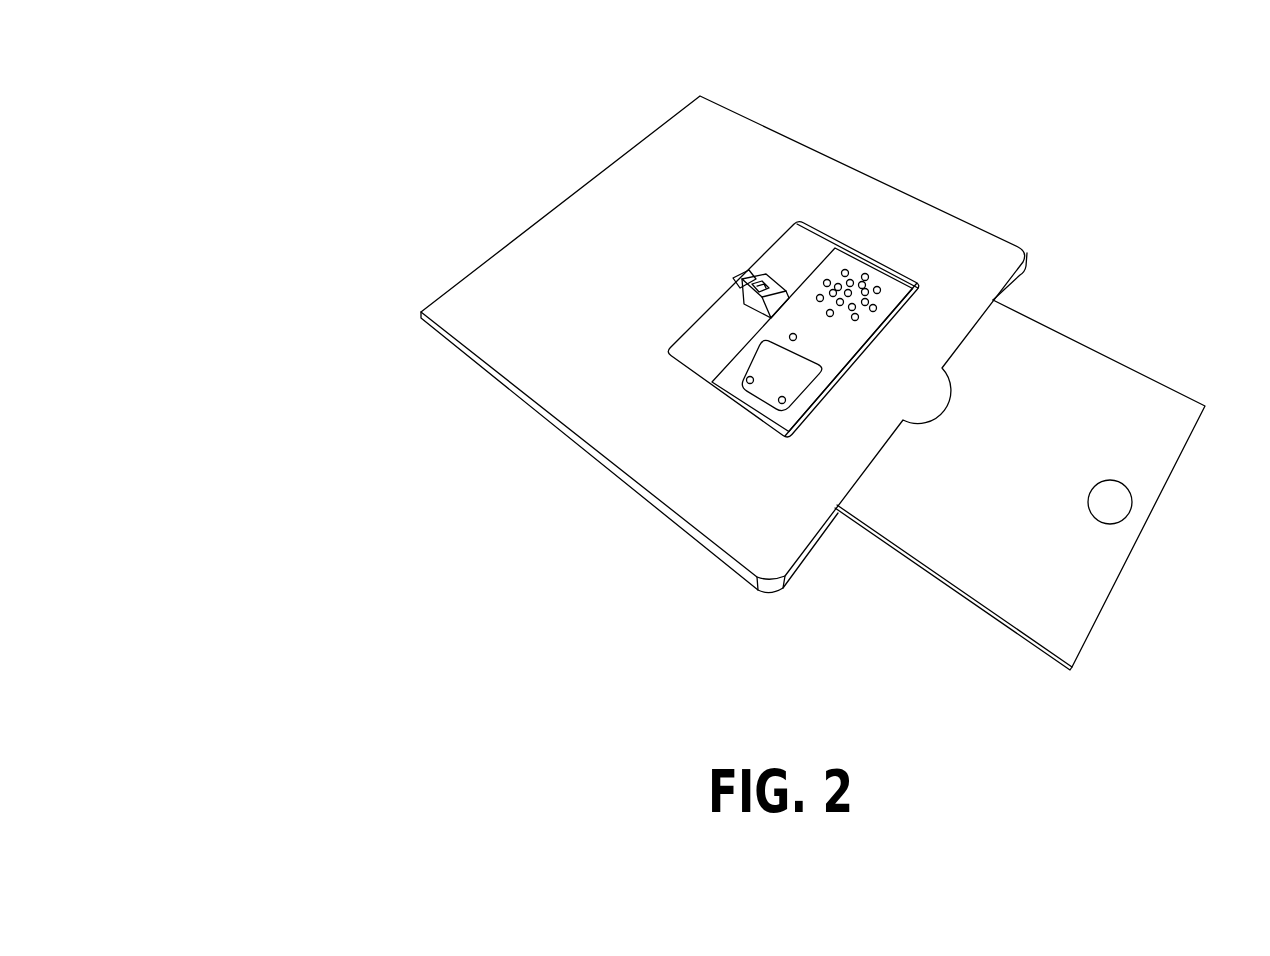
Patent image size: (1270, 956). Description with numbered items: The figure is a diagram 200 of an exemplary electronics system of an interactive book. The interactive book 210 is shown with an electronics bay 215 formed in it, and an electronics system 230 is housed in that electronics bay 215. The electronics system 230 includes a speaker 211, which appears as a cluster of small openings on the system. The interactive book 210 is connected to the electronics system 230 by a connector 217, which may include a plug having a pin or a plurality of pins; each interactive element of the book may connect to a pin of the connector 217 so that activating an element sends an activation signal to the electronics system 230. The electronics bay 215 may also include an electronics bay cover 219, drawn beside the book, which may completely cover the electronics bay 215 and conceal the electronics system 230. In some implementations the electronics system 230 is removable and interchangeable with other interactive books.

The diagram 200 is at (272, 117).
The interactive book 210 is at (470, 313).
The speaker 211 is at (867, 283).
The electronics bay 215 is at (690, 352).
The connector 217 is at (786, 268).
The electronics bay cover 219 is at (1135, 400).
The electronics system 230 is at (778, 397).